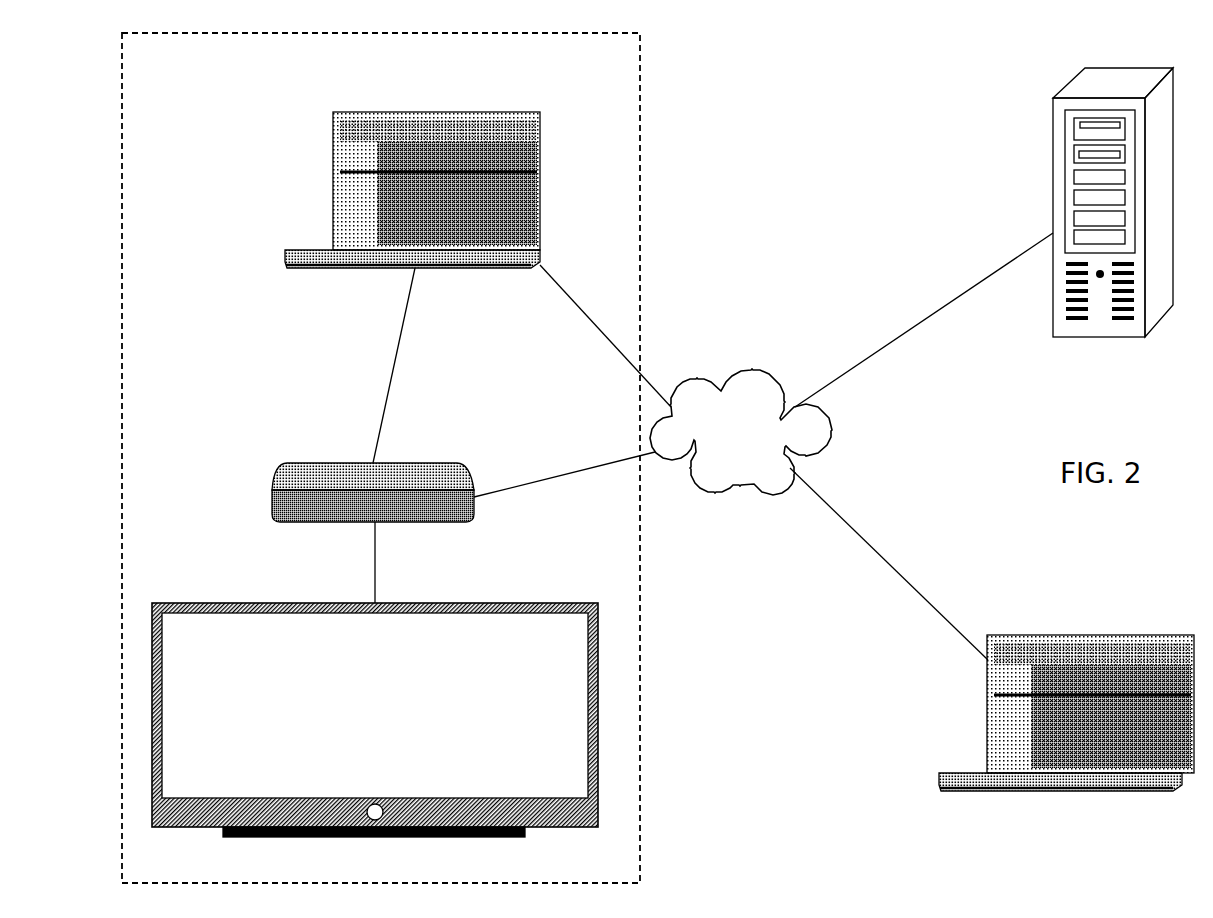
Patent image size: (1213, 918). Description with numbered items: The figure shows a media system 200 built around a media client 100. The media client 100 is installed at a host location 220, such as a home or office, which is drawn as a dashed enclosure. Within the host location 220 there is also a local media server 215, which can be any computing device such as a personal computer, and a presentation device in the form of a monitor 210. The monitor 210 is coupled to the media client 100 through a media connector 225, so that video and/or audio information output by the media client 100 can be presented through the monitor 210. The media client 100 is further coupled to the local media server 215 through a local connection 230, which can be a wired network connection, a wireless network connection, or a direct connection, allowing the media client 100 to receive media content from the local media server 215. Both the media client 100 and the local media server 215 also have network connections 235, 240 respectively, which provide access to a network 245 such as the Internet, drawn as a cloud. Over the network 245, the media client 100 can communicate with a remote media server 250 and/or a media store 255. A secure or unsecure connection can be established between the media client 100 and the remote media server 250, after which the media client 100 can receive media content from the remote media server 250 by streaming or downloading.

The media client 100 is at (276, 485).
The media system 200 is at (762, 176).
The monitor 210 is at (470, 603).
The local media server 215 is at (335, 135).
The host location 220 is at (641, 284).
The media connector 225 is at (376, 580).
The local connection 230 is at (398, 370).
The network connection 235 is at (575, 475).
The network connection 240 is at (559, 286).
The network 245 is at (740, 372).
The remote media server 250 is at (940, 784).
The media store 255 is at (1053, 112).